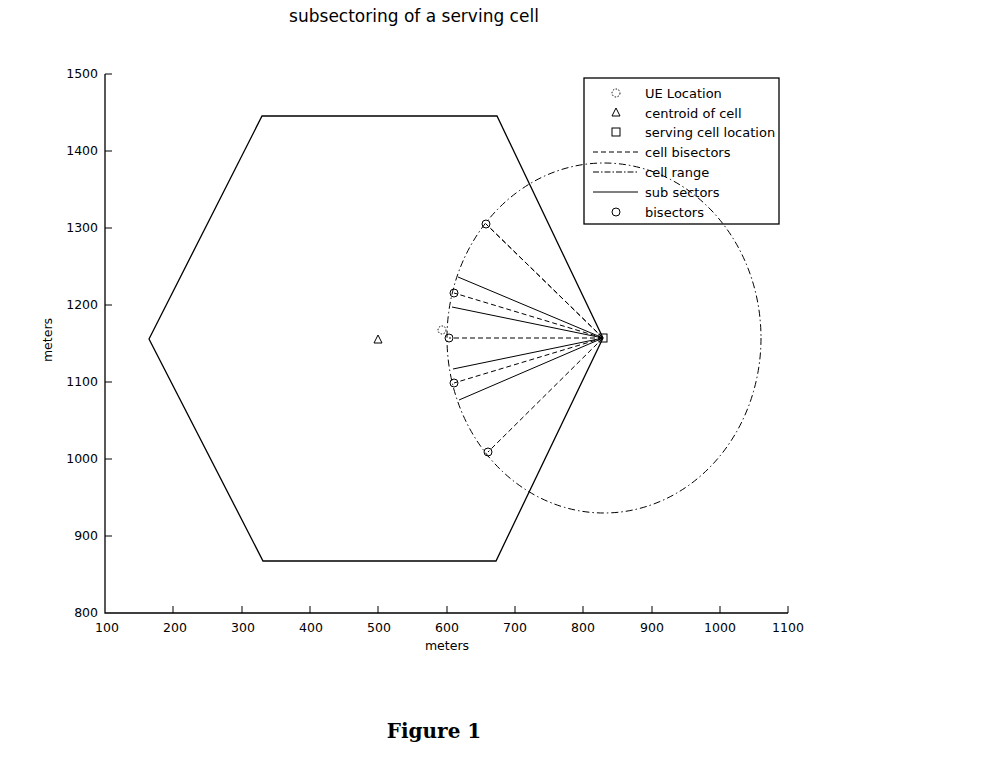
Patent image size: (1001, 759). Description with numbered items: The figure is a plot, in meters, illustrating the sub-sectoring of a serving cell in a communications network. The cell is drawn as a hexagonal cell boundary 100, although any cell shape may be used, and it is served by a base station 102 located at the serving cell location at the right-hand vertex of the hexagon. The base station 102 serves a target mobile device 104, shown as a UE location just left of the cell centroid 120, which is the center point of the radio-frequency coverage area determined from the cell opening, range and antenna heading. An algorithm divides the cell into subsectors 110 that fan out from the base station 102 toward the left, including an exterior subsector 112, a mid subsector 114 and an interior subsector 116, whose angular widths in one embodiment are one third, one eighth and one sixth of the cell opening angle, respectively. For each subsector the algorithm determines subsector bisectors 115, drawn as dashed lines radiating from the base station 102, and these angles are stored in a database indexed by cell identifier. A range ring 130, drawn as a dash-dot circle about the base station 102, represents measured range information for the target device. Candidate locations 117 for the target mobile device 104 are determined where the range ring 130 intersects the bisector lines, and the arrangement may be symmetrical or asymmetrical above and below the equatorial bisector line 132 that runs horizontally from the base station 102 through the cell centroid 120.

The cell boundary 100 is at (505, 542).
The base station 102 is at (606, 335).
The target mobile device 104 is at (438, 330).
The subsectors 110 is at (418, 438).
The exterior subsector 112 is at (520, 256).
The mid subsector 114 is at (488, 303).
The subsector bisectors 115 is at (481, 398).
The interior subsector 116 is at (530, 338).
The candidate locations 117 is at (486, 224).
The cell centroid 120 is at (378, 338).
The range ring 130 is at (762, 340).
The equatorial bisector line 132 is at (465, 338).